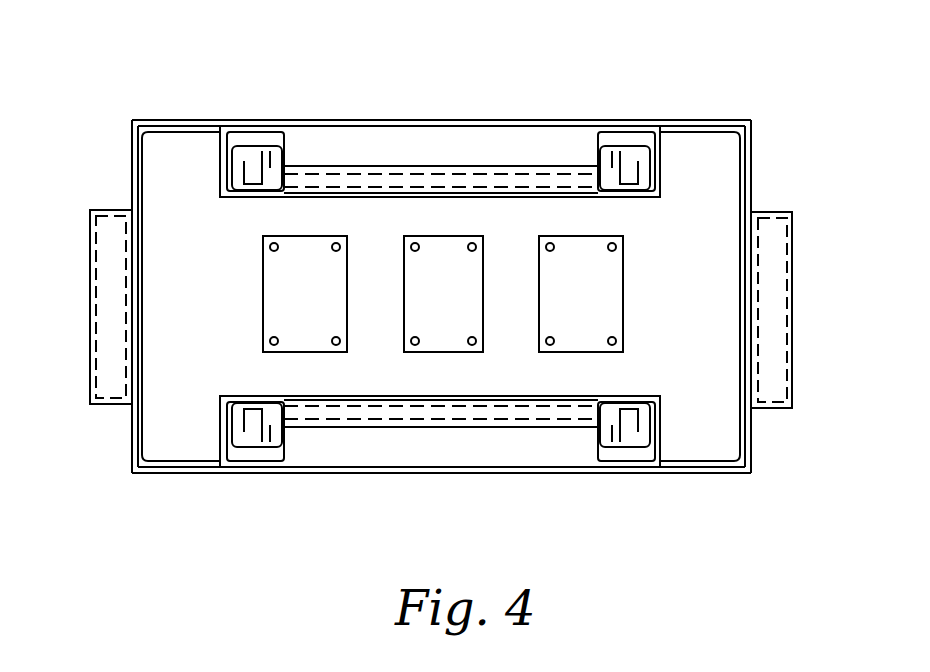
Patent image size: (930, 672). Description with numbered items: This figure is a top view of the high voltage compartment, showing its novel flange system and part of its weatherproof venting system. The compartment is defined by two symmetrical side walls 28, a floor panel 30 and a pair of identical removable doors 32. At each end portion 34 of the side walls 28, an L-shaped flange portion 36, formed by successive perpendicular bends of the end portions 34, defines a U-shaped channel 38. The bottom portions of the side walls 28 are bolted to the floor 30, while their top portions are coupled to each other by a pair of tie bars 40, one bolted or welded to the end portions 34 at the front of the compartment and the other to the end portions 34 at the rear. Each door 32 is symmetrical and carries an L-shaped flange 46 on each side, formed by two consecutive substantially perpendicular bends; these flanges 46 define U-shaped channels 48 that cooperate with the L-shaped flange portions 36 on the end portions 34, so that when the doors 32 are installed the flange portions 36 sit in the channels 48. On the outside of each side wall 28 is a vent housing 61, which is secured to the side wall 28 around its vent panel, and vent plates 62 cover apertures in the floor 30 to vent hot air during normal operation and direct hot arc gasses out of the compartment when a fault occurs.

The side wall 28 is at (132, 160).
The floor panel 30 is at (184, 282).
The removable door 32 is at (520, 166).
The end portion 34 is at (193, 123).
The L-shaped flange portion 36 is at (265, 185).
The U-shaped channel 38 is at (283, 158).
The tie bar 40 is at (372, 126).
The L-shaped flange 46 is at (232, 172).
The U-shaped channel 48 is at (258, 160).
The vent housing 61 is at (90, 298).
The vent plate 62 is at (566, 304).